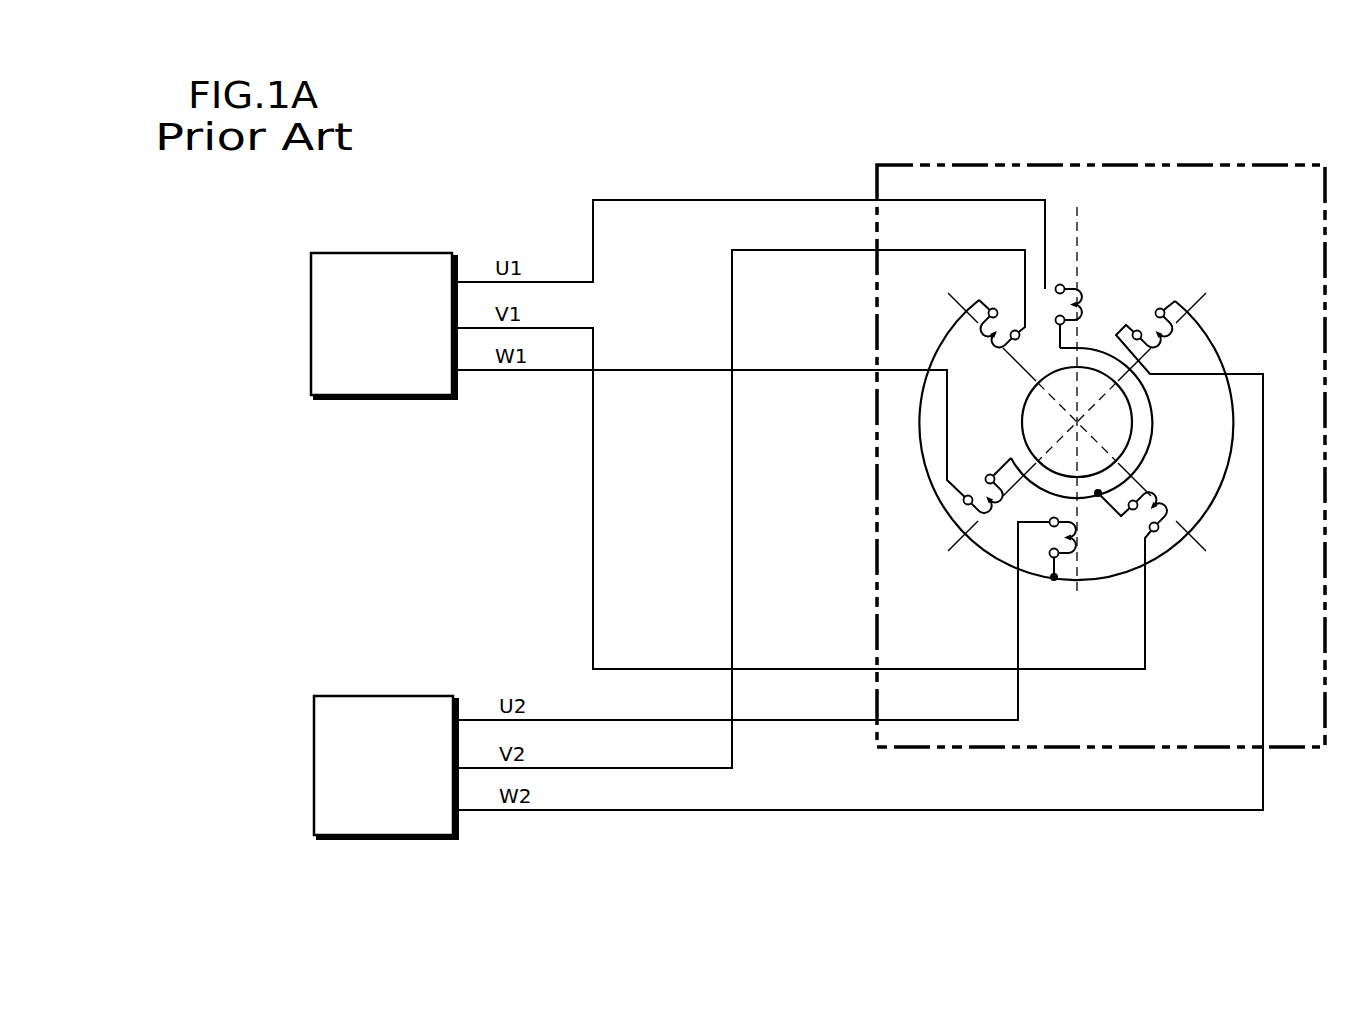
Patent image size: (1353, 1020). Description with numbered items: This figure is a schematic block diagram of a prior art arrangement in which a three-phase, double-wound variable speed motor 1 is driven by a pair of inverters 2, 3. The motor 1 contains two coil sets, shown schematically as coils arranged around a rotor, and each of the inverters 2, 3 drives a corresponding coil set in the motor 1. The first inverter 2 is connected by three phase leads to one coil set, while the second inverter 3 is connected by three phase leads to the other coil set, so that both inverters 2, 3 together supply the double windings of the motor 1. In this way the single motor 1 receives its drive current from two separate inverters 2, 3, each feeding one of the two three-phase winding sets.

The three-phase, double-wound variable speed motor 1 is at (1220, 163).
The inverter 2 is at (365, 253).
The inverter 3 is at (373, 694).